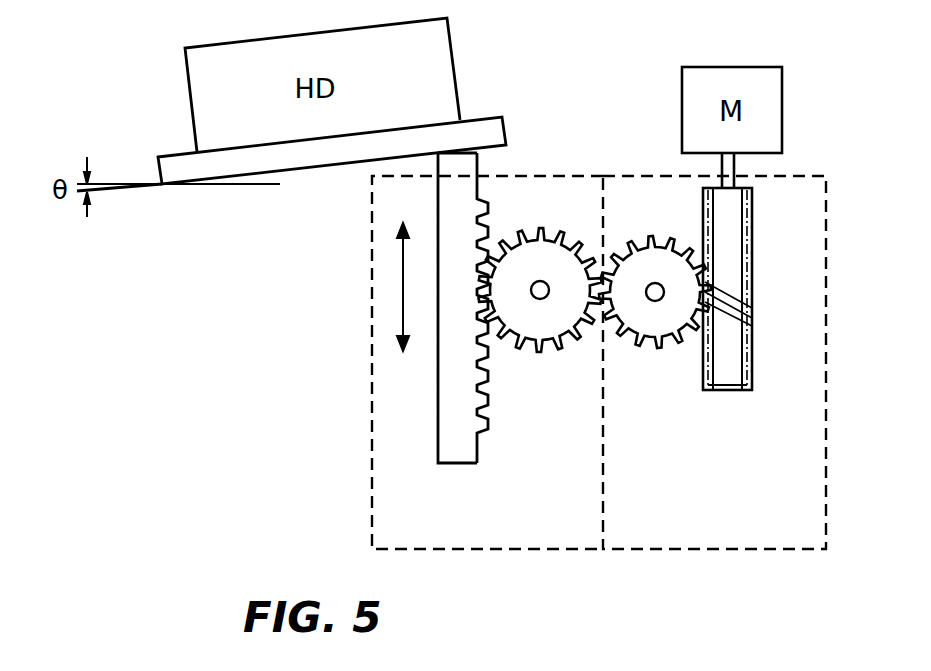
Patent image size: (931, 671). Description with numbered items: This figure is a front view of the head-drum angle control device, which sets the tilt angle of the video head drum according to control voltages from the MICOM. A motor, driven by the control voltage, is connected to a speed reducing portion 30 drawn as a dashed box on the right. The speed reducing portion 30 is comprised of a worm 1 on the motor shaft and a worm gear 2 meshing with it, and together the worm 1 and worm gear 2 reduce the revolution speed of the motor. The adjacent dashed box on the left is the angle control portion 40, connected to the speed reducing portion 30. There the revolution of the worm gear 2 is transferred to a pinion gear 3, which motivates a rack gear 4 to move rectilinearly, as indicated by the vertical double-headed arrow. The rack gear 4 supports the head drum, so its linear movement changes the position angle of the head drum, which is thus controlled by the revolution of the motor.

The worm 1 is at (722, 390).
The worm gear 2 is at (642, 350).
The pinion gear 3 is at (540, 350).
The rack gear 4 is at (457, 453).
The speed reducing portion 30 is at (738, 550).
The angle control portion 40 is at (535, 550).